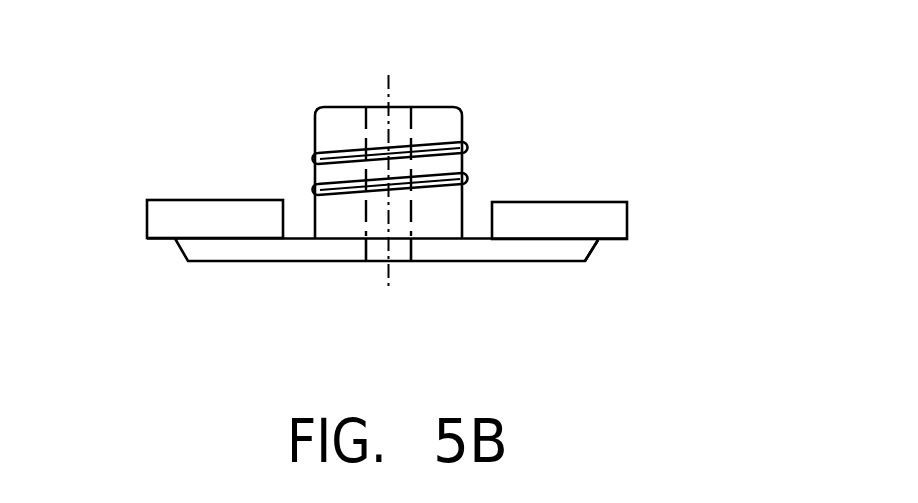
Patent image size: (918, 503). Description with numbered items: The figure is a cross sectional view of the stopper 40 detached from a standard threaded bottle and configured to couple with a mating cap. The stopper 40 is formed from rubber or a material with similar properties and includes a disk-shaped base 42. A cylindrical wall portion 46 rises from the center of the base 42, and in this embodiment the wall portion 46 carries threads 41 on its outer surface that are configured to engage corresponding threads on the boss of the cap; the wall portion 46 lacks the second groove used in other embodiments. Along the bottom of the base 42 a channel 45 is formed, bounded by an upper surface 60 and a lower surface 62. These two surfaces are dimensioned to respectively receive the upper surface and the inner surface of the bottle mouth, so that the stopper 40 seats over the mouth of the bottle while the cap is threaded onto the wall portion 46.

The stopper 40 is at (628, 174).
The threads 41 is at (437, 140).
The disk-shaped base 42 is at (163, 217).
The channel 45 is at (598, 243).
The cylindrical wall portion 46 is at (338, 118).
The upper surface 60 is at (598, 242).
The lower surface 62 is at (586, 259).